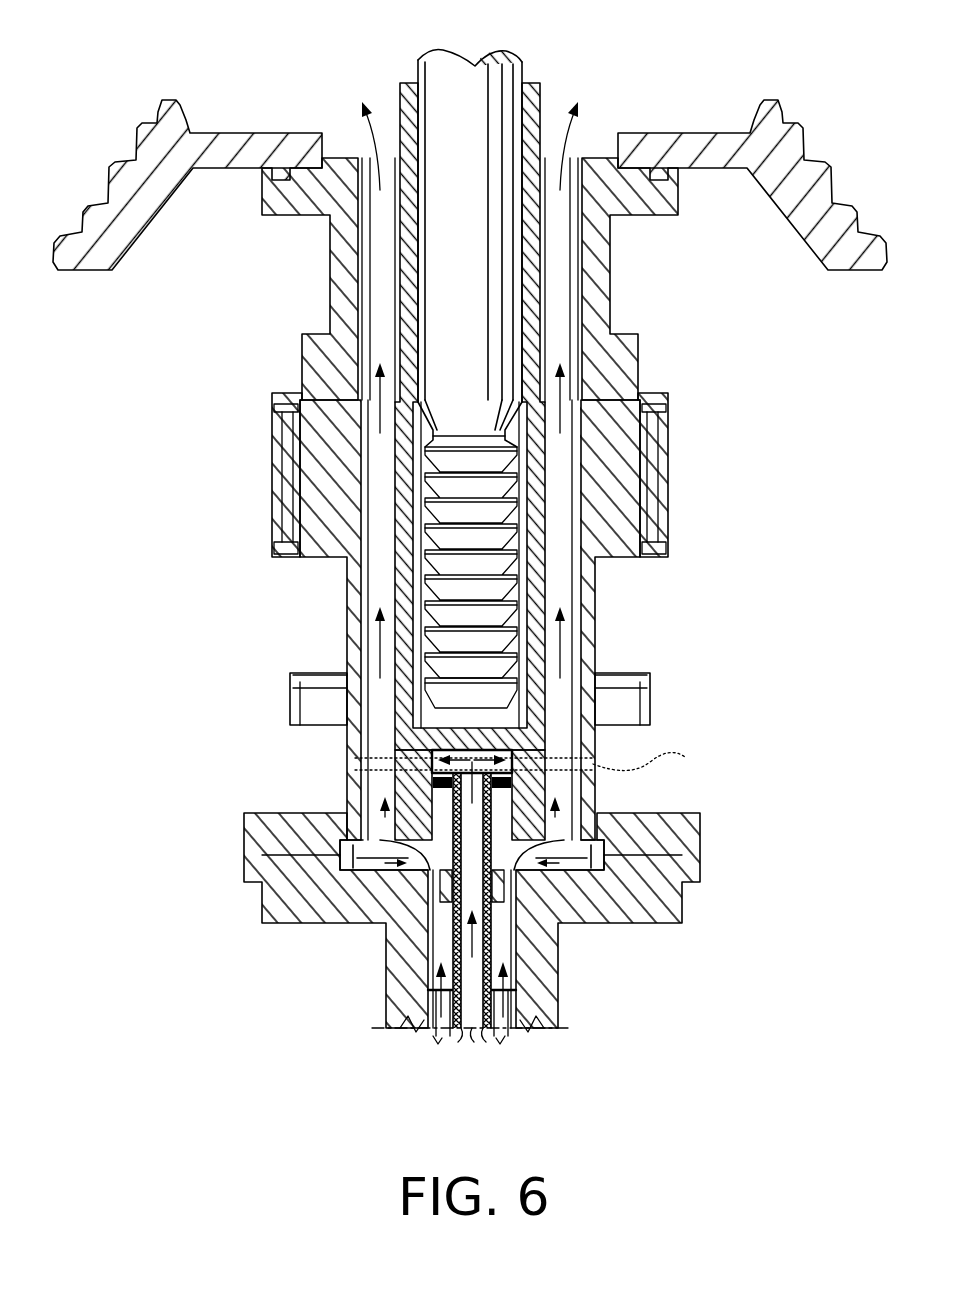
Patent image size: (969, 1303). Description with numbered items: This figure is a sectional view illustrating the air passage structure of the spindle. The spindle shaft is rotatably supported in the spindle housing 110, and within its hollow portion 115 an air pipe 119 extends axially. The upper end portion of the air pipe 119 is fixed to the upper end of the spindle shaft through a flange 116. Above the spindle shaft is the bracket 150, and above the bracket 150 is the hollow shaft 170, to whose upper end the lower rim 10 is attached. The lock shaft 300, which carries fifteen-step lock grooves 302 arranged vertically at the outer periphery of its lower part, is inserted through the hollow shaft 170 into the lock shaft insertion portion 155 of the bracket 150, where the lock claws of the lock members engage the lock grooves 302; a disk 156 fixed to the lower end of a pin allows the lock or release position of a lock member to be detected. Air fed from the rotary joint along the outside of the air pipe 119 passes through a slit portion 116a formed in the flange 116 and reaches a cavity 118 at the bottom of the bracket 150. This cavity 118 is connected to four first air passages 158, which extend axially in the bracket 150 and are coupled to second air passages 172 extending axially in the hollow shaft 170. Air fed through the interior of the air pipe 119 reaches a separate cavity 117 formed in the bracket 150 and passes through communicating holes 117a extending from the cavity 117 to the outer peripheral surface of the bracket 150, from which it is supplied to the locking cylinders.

The lower rim 10 is at (122, 218).
The spindle housing 110 is at (563, 973).
The hollow portion 115 is at (465, 1028).
The flange 116 is at (437, 800).
The slit portion 116a is at (345, 850).
The cavity 117 is at (478, 735).
The communicating holes 117a is at (553, 758).
The cavity 118 is at (592, 801).
The air pipe 119 is at (440, 1028).
The bracket 150 is at (708, 442).
The lock shaft insertion portion 155 is at (521, 594).
The disk 156 is at (633, 676).
The first air passages 158 is at (373, 482).
The hollow shaft 170 is at (650, 321).
The second air passages 172 is at (362, 280).
The lock shaft 300 is at (487, 105).
The lock grooves 302 is at (463, 460).